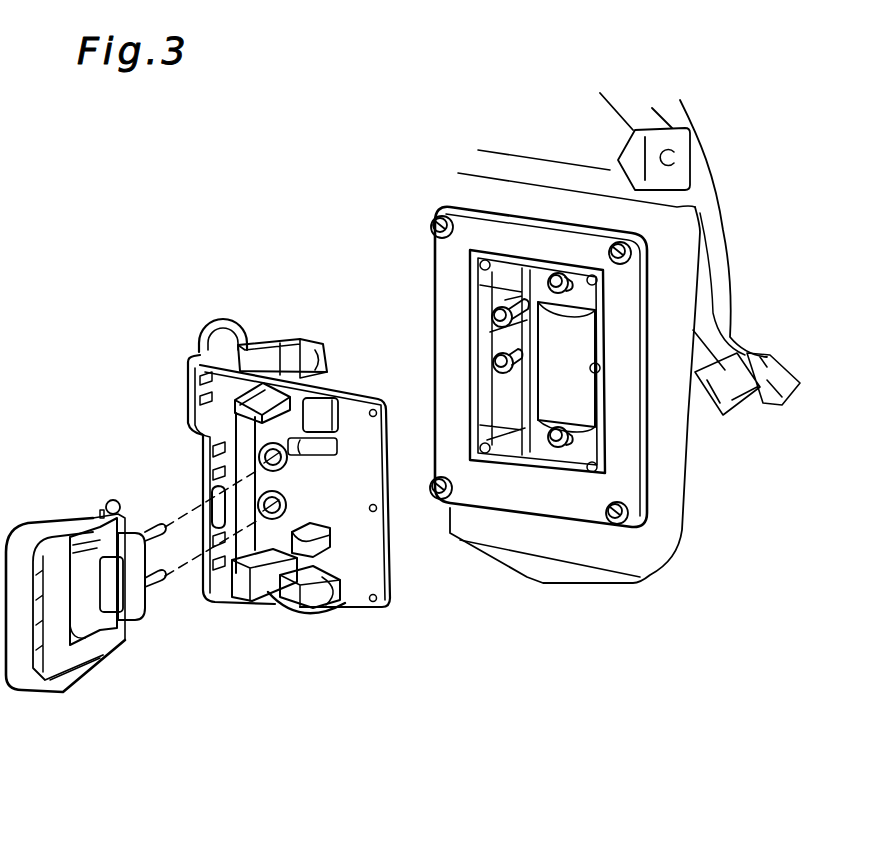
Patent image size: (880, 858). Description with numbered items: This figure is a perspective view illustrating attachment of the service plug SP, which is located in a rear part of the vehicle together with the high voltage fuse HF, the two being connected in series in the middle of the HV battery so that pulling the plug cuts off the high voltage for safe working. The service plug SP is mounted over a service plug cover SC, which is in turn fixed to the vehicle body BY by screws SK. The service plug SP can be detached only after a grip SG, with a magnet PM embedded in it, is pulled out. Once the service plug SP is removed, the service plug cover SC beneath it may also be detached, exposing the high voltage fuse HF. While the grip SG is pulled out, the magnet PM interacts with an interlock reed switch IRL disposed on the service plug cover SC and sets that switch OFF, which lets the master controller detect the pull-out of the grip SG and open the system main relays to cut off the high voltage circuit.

The vehicle body BY is at (522, 246).
The screw / bolt SK is at (495, 311).
The high voltage fuse HF is at (567, 414).
The service plug cover SC is at (292, 418).
The interlock reed switch IRL is at (303, 593).
The grip SG is at (50, 520).
The magnet PM is at (116, 650).
The service plug SP is at (59, 739).